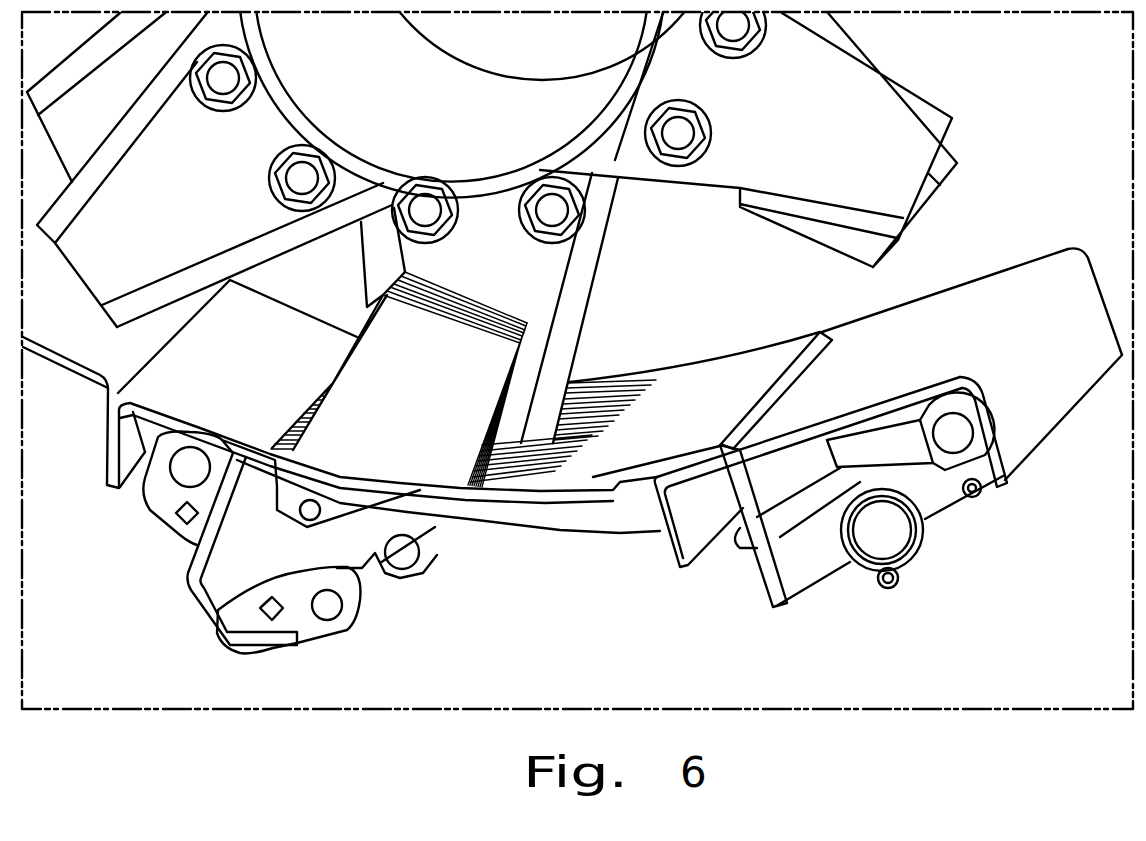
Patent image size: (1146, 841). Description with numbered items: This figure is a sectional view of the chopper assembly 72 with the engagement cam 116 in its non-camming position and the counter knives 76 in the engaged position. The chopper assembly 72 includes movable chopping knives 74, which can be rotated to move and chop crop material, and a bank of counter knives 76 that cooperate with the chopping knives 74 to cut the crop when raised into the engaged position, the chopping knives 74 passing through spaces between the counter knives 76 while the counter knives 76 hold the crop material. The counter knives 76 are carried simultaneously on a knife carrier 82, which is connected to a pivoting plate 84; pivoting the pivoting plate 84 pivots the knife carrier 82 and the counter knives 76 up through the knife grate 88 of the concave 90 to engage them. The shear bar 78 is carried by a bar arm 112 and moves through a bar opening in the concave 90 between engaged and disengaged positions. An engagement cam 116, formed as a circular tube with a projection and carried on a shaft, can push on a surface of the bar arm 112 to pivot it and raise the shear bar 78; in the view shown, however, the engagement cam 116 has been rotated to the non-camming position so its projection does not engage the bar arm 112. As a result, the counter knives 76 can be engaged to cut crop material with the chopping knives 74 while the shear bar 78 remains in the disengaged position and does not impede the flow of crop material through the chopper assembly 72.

The chopper assembly 72 is at (980, 110).
The chopping knives 74 is at (377, 232).
The counter knives 76 is at (438, 440).
The shear bar 78 is at (760, 565).
The knife carrier 82 is at (357, 555).
The pivoting plate 84 is at (307, 628).
The knife grate 88 is at (590, 408).
The concave 90 is at (715, 378).
The bar arm 112 is at (895, 420).
The engagement cam 116 is at (858, 586).